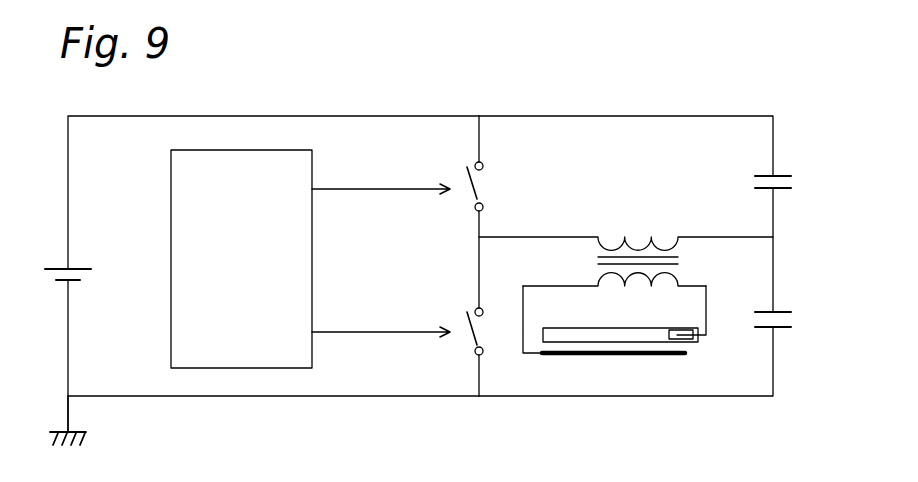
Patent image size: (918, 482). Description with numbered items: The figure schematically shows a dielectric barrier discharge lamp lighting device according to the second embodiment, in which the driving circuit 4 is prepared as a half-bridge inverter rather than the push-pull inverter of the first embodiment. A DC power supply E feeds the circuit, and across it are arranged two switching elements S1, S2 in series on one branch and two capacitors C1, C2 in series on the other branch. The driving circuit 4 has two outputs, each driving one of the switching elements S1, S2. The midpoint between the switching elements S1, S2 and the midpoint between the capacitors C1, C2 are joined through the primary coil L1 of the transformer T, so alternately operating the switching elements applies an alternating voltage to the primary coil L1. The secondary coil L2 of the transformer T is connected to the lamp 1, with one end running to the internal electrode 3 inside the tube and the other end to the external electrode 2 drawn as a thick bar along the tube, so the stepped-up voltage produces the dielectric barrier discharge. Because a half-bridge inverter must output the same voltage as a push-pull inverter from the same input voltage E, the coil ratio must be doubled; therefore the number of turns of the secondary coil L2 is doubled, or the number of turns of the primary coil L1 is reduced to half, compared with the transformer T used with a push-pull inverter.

The lamp 1 is at (592, 333).
The external electrode 2 is at (690, 338).
The internal electrode 3 is at (653, 357).
The driving circuit 4 is at (170, 198).
The DC power supply E is at (56, 276).
The switching element S1 is at (457, 202).
The switching element S2 is at (458, 346).
The primary coil L1 is at (626, 219).
The secondary coil L2 is at (614, 298).
The transformer T is at (659, 262).
The capacitor C1 is at (793, 180).
The capacitor C2 is at (794, 320).